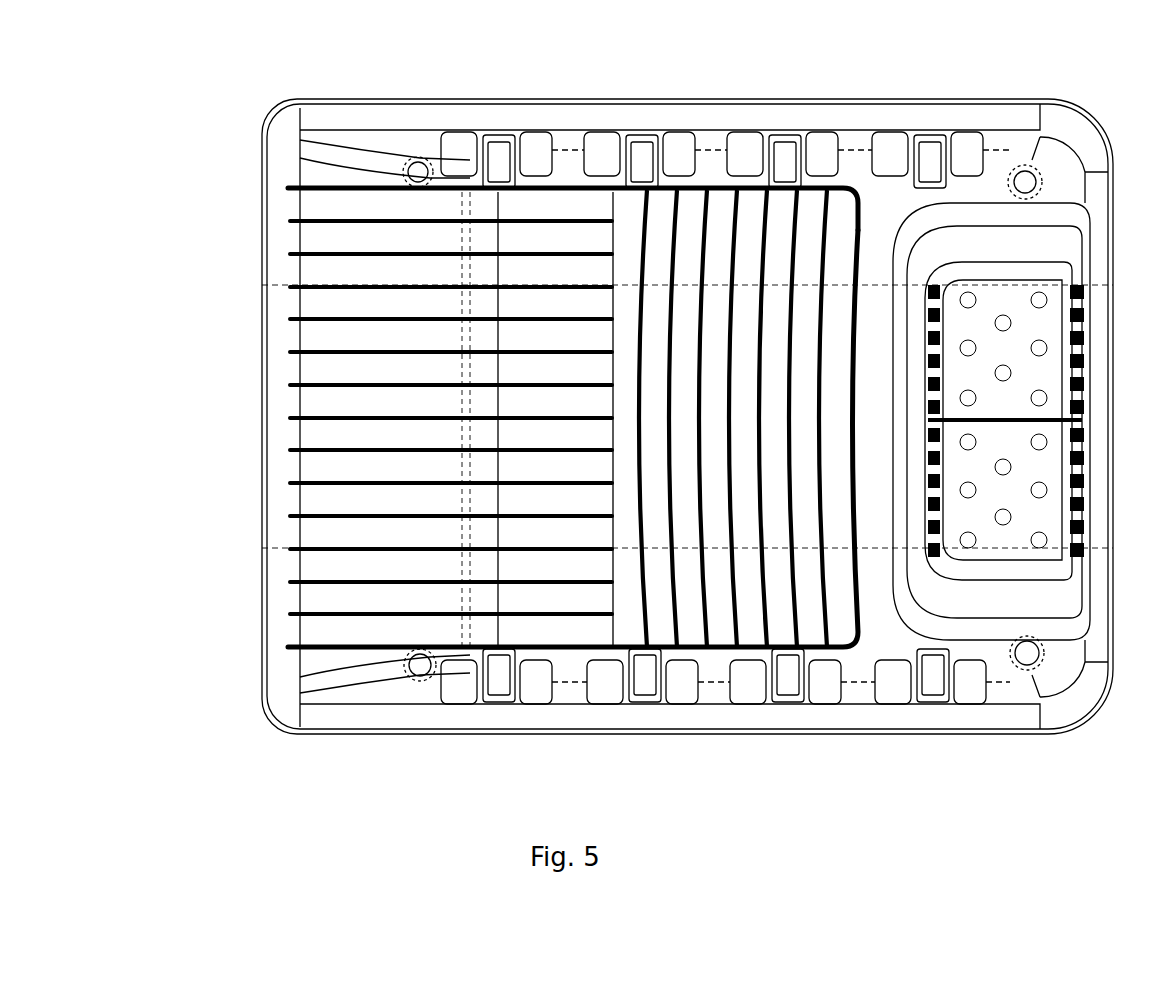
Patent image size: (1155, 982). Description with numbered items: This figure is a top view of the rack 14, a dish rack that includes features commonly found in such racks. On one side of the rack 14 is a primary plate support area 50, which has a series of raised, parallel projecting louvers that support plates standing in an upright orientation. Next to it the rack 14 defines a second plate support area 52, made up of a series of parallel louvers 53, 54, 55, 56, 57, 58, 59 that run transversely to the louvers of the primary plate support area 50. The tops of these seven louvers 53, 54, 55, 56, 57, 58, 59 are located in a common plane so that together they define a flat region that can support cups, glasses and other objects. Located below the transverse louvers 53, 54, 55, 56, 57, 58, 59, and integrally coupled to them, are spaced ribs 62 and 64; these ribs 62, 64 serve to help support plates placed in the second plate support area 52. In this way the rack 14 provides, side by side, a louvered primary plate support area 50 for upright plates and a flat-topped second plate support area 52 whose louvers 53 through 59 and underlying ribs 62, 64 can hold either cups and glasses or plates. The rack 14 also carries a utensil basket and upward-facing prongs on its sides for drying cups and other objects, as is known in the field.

The rack 14 is at (244, 420).
The primary plate support area 50 is at (308, 268).
The second plate support area 52 is at (618, 435).
The louver 53 is at (826, 221).
The louver 54 is at (796, 212).
The louver 55 is at (768, 636).
The louver 56 is at (737, 636).
The louver 57 is at (707, 636).
The louver 58 is at (673, 636).
The louver 59 is at (645, 636).
The rib 62 is at (628, 283).
The rib 64 is at (850, 538).